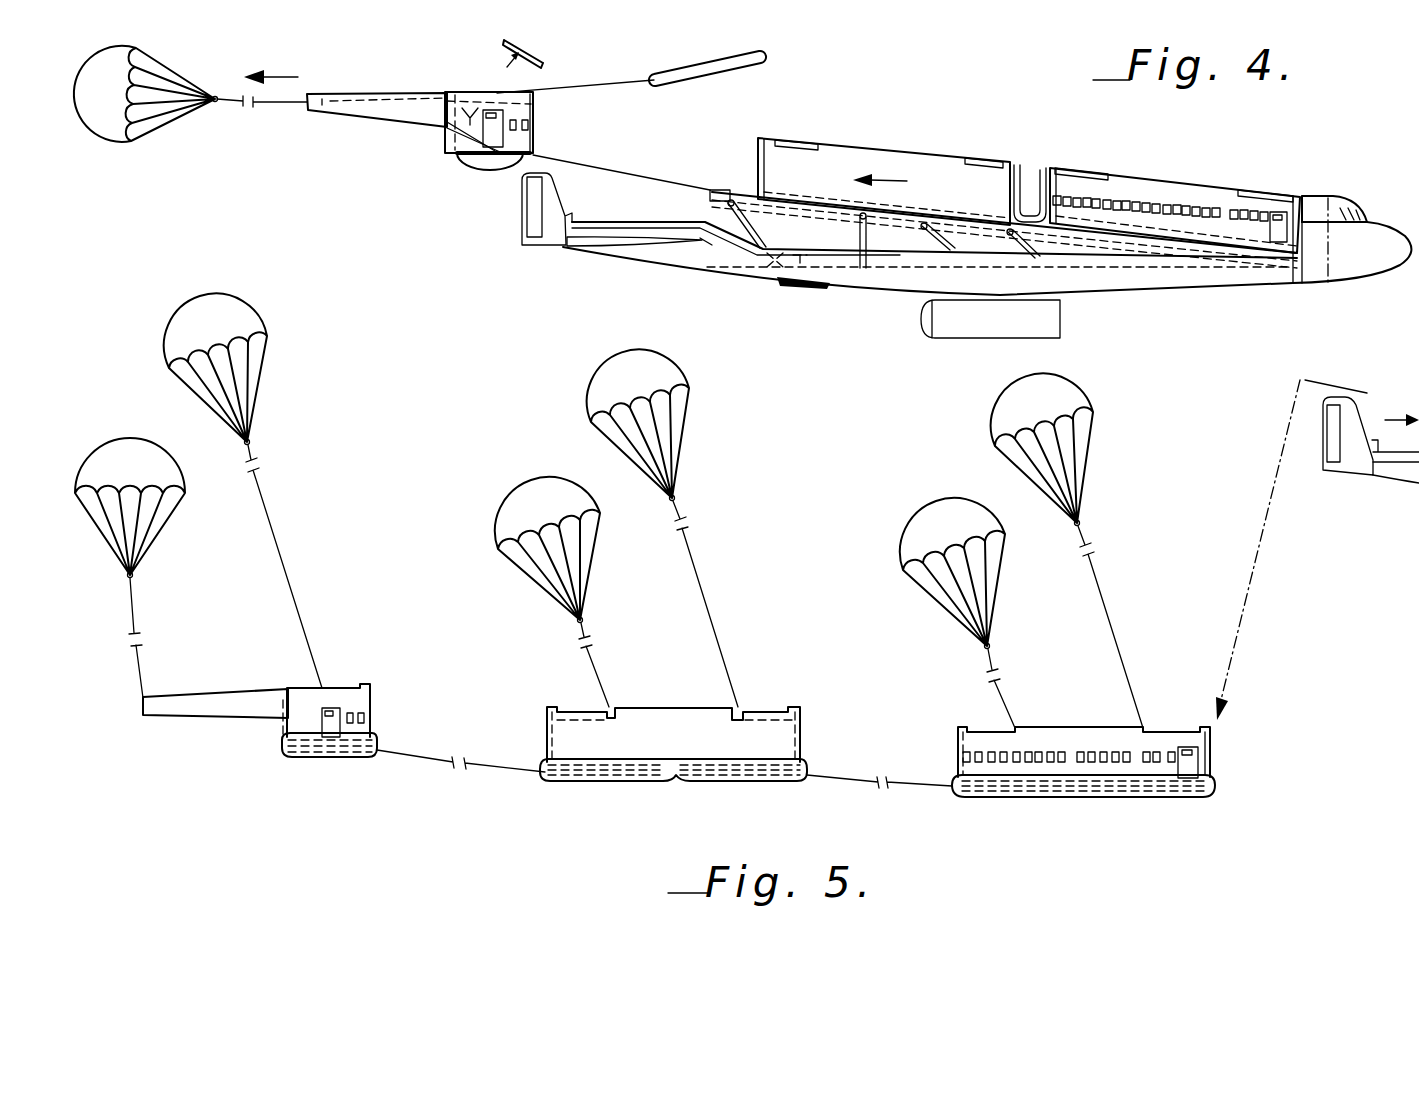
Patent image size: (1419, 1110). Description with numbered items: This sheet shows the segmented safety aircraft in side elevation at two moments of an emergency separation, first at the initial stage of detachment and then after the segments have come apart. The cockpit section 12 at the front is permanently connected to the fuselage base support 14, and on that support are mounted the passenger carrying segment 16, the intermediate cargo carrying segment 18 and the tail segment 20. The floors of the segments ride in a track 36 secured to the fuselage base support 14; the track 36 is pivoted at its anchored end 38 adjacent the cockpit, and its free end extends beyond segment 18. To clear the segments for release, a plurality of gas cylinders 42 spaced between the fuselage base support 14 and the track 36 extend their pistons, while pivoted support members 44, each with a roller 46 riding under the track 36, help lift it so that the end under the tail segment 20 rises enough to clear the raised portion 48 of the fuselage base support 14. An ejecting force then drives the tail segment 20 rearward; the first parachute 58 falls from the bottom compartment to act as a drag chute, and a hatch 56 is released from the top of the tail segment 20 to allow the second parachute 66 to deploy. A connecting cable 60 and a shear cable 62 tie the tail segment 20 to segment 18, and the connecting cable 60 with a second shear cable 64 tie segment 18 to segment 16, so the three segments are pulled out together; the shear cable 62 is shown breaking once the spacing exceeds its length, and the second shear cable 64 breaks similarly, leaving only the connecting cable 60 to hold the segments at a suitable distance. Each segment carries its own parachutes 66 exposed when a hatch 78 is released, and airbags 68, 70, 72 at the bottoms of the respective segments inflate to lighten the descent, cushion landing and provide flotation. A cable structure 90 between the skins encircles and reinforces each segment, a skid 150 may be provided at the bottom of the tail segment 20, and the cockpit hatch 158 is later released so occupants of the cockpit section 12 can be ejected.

In FIG. 4, the cockpit section 12 is at (1412, 320).
In FIG. 4, the fuselage base support 14 is at (1250, 326).
In FIG. 5, the fuselage base support 14 is at (1418, 531).
In FIG. 4, the passenger carrying segment 16 is at (1210, 166).
In FIG. 5, the passenger carrying segment 16 is at (1092, 696).
In FIG. 4, the cargo carrying segment 18 is at (890, 130).
In FIG. 5, the cargo carrying segment 18 is at (695, 690).
In FIG. 4, the tail segment 20 is at (379, 99).
In FIG. 5, the tail segment 20 is at (247, 700).
In FIG. 4, the track 36 is at (715, 188).
In FIG. 4, the anchored end 38 is at (1291, 280).
In FIG. 4, the gas cylinders 42 is at (992, 240).
In FIG. 4, the pivoted support members 44 is at (820, 240).
In FIG. 4, the roller 46 is at (683, 217).
In FIG. 4, the raised portion 48 is at (690, 220).
In FIG. 4, the hatch 56 is at (546, 40).
In FIG. 4, the first parachute 58 is at (107, 115).
In FIG. 5, the first parachute 58 is at (133, 462).
In FIG. 4, the connecting cable 60 is at (647, 178).
In FIG. 5, the connecting cable 60 is at (406, 762).
In FIG. 4, the shear cable 62 is at (535, 105).
In FIG. 4, the second shear cable 64 is at (1077, 150).
In FIG. 4, the second parachute 66 is at (688, 73).
In FIG. 5, the second parachute 66 is at (240, 320).
In FIG. 4, the airbag 68 is at (485, 166).
In FIG. 5, the airbag 68 is at (318, 758).
In FIG. 5, the airbags 70 is at (707, 776).
In FIG. 5, the airbags 72 is at (1123, 788).
In FIG. 4, the hatch 78 is at (795, 140).
In FIG. 4, the cable structure 90 is at (458, 108).
In FIG. 4, the skid 150 is at (423, 175).
In FIG. 4, the hatch 158 is at (1337, 203).